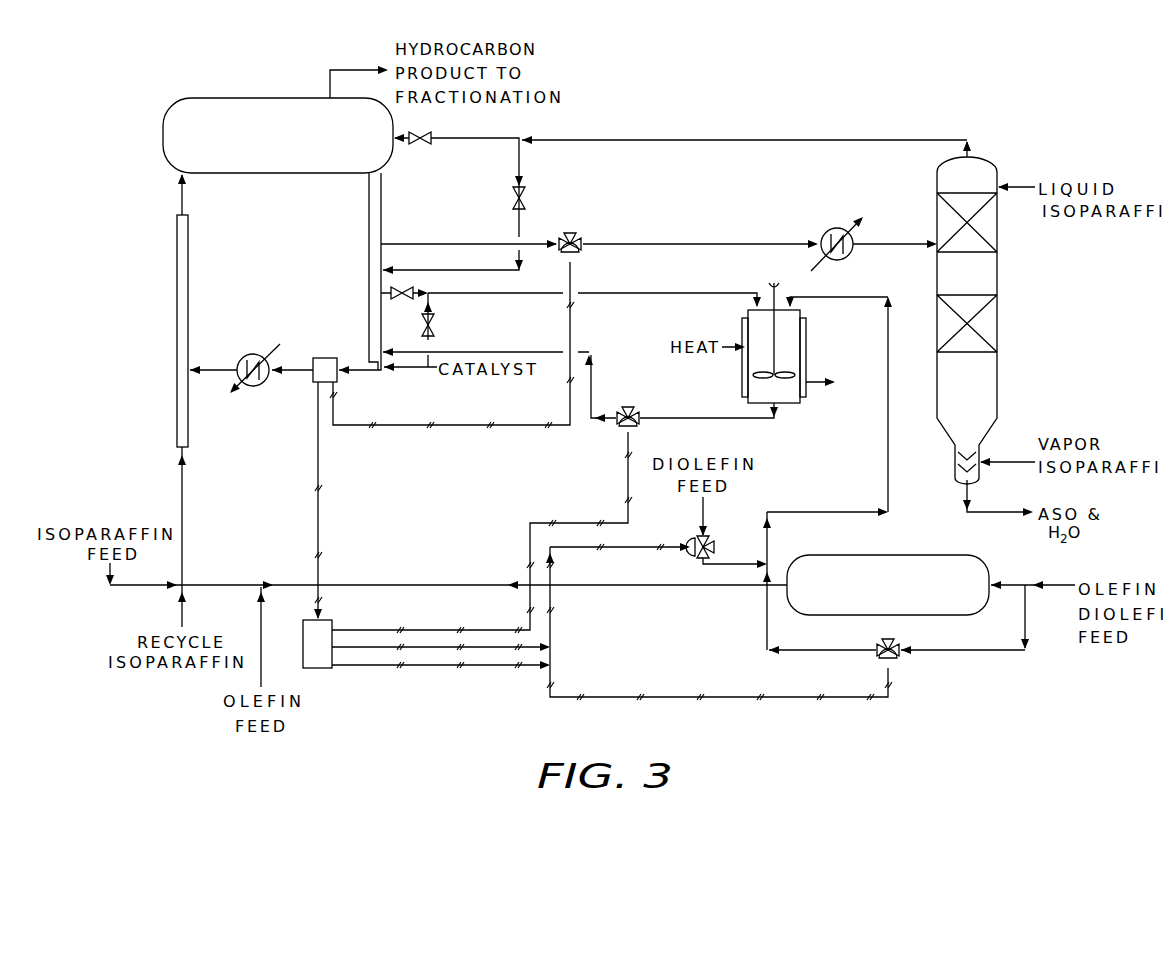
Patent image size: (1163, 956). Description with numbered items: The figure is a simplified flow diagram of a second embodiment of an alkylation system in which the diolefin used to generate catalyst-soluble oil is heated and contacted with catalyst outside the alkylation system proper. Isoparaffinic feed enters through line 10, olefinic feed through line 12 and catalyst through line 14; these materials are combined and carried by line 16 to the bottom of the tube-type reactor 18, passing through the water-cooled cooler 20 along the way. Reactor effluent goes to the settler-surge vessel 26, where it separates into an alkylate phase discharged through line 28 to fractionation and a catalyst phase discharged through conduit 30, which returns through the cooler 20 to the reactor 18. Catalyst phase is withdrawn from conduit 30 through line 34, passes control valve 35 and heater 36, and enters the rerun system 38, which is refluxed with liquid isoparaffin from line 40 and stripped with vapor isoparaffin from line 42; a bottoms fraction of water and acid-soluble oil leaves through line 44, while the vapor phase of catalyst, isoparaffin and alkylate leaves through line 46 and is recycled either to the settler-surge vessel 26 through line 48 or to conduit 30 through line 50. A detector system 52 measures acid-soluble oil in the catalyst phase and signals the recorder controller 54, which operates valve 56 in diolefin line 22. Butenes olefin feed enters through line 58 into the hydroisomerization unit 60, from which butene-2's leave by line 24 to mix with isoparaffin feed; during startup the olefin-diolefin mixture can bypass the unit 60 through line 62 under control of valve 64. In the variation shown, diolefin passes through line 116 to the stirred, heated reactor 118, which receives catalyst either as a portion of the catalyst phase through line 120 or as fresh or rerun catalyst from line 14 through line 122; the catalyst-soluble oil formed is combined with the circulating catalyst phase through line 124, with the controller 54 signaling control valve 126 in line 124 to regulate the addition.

The isoparaffinic feed line 10 is at (168, 584).
The olefinic feed line 12 is at (265, 618).
The catalyst line 14 is at (410, 367).
The feed line to reactor 16 is at (178, 480).
The tube-type reactor 18 is at (188, 258).
The water-cooled cooler 20 is at (246, 356).
The diolefin feed line 22 is at (700, 508).
The olefin discharge line 24 is at (298, 584).
The settler-surge vessel 26 is at (292, 147).
The alkylate discharge line 28 is at (326, 84).
The catalyst phase conduit 30 is at (366, 224).
The catalyst withdrawal line 34 is at (483, 243).
The control valve 35 is at (572, 236).
The heater 36 is at (830, 230).
The rerun system 38 is at (979, 401).
The liquid isoparaffin line 40 is at (1014, 187).
The vapor isoparaffin line 42 is at (993, 462).
The bottoms discharge line 44 is at (983, 512).
The vapor discharge line 46 is at (958, 140).
The recycle line to settler 48 is at (488, 138).
The recycle line to catalyst conduit 50 is at (513, 220).
The detector system 52 is at (322, 358).
The recorder controller 54 is at (320, 669).
The diolefin control valve 56 is at (714, 548).
The olefin feed line to hydroisomerization unit 58 is at (999, 584).
The hydroisomerization unit 60 is at (902, 601).
The bypass line 62 is at (982, 649).
The bypass control valve 64 is at (886, 641).
The diolefin line to reactor 116 is at (875, 512).
The stirred heated reactor 118 is at (792, 398).
The catalyst phase supply line 120 is at (668, 293).
The fresh catalyst supply line 122 is at (434, 322).
The catalyst-soluble oil line 124 is at (727, 424).
The control valve 126 is at (634, 416).